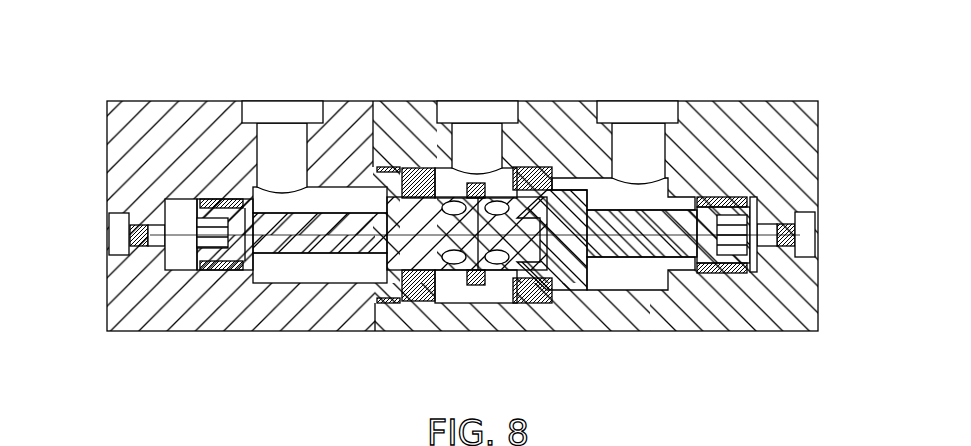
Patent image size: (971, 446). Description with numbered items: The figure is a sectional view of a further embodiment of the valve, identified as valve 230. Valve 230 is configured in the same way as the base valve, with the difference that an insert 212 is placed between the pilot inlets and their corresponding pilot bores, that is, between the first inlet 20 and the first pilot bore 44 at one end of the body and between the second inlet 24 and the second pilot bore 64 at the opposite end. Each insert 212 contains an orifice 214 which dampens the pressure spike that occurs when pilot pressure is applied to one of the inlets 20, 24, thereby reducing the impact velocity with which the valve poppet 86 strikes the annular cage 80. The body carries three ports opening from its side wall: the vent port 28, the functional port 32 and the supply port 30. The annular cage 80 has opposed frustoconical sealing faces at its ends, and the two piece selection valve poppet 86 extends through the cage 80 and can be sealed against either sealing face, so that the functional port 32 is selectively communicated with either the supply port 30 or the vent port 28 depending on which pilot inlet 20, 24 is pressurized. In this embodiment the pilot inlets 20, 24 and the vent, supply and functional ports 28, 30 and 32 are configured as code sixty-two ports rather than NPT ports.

The valve 230 is at (828, 84).
The vent port 28 is at (278, 103).
The functional port 32 is at (476, 103).
The supply port 30 is at (646, 103).
The first inlet 20 is at (118, 246).
The second inlet 24 is at (807, 243).
The insert 212 is at (143, 232).
The orifice 214 is at (140, 228).
The first pilot bore 44 is at (180, 255).
The annular cage 80 is at (437, 297).
The valve poppet 86 is at (563, 268).
The second pilot bore 64 is at (753, 197).